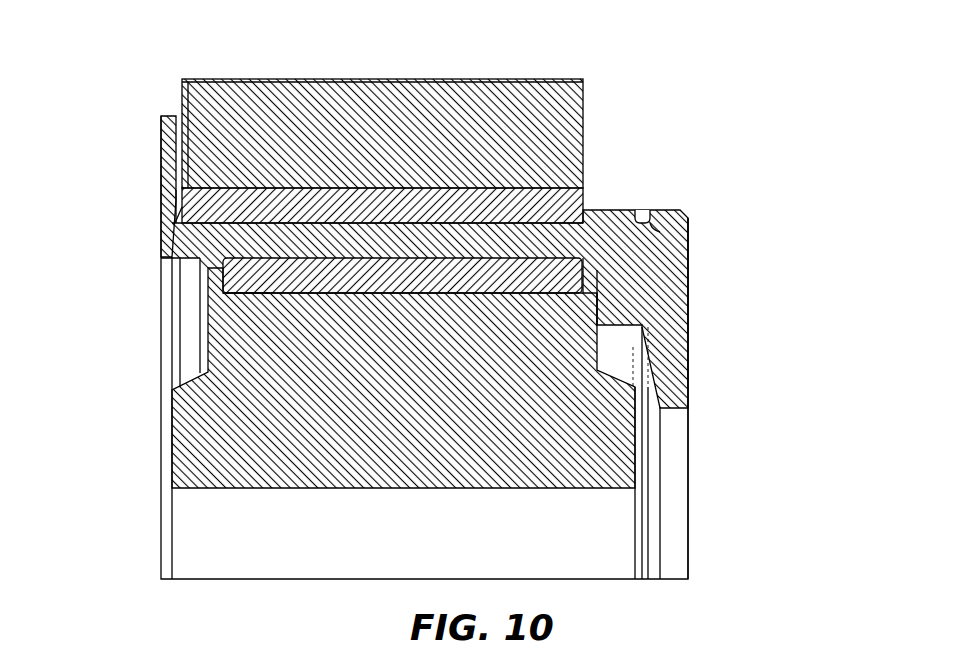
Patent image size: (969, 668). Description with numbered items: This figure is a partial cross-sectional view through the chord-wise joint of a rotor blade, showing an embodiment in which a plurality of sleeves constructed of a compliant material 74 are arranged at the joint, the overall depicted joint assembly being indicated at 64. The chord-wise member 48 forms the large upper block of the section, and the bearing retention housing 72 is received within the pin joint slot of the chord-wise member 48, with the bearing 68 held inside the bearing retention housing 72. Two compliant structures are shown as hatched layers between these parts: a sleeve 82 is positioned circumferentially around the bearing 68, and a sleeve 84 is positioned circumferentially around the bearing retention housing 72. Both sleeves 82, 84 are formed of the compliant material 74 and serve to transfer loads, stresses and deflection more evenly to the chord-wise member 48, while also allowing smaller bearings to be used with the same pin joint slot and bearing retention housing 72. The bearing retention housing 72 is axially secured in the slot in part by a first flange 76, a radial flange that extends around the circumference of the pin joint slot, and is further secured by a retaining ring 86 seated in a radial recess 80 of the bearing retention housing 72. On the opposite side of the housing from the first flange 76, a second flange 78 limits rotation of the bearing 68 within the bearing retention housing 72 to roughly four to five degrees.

The chord-wise member 48 is at (265, 76).
The bearing assembly 64 is at (772, 292).
The bearing 68 is at (170, 430).
The bearing retention housing 72 is at (692, 274).
The compliant material 74 is at (221, 268).
The first flange 76 is at (159, 160).
The second flange 78 is at (597, 307).
The radial recess 80 is at (643, 208).
The sleeve 82 is at (264, 297).
The sleeve 84 is at (181, 205).
The retaining ring 86 is at (651, 228).